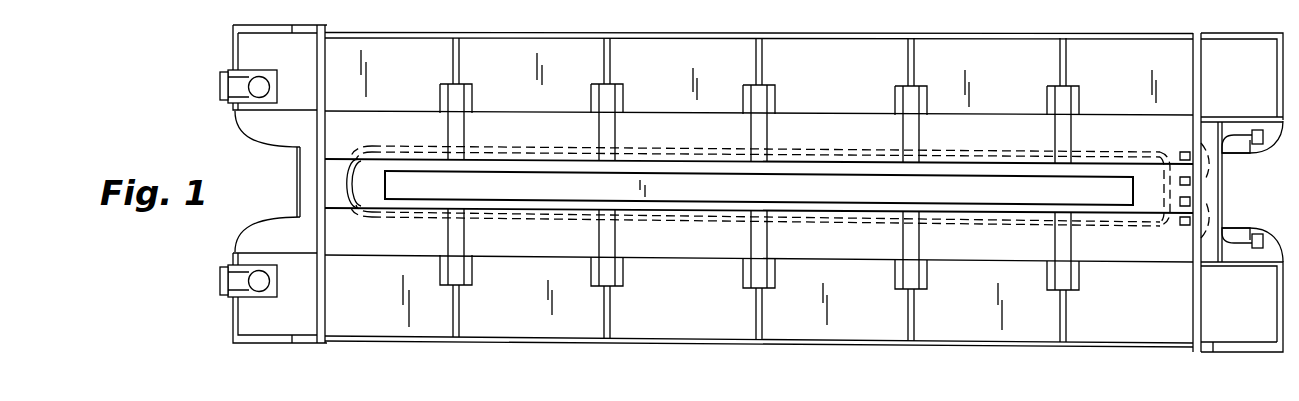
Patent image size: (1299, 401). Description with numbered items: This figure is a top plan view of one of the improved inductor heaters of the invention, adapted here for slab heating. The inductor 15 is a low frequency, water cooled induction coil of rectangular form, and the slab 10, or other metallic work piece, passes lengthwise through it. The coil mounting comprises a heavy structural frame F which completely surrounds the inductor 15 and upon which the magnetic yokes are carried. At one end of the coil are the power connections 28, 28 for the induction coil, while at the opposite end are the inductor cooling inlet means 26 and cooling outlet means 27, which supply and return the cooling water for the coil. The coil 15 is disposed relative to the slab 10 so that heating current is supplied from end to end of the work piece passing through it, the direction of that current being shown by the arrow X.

The slab 10 is at (753, 186).
The inductor 15 is at (343, 180).
The inductor cooling inlet means 26 is at (220, 283).
The inductor cooling outlet means 27 is at (220, 85).
The power connections 28 is at (1243, 238).
The structural frame F is at (898, 24).
The arrow indicating direction of heating current X is at (652, 139).